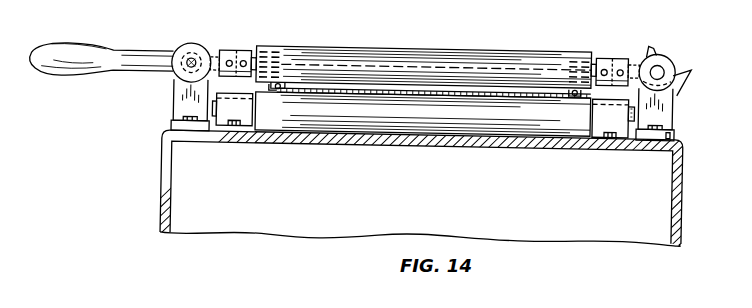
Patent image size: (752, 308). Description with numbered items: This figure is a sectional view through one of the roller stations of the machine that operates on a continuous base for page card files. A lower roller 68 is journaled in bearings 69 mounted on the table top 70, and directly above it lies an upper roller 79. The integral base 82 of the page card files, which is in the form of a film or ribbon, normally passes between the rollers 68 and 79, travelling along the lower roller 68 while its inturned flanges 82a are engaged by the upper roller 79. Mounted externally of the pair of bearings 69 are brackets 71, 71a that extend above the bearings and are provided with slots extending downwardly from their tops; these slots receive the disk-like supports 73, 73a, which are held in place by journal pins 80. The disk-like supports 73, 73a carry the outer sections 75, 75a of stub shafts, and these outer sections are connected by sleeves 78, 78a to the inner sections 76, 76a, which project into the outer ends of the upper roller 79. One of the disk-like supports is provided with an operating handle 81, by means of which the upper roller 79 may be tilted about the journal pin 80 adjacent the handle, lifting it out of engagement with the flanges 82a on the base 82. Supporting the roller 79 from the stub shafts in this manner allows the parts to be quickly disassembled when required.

The rollers 68 is at (357, 120).
The bearings 69 is at (232, 102).
The table top 70 is at (418, 141).
The bracket 71 is at (674, 104).
The bracket 71a is at (180, 95).
The disk-like support 73 is at (676, 66).
The disk-like support 73a is at (212, 48).
The outer section of stub shaft 75 is at (637, 58).
The outer section of stub shaft 75a is at (233, 48).
The inner section of stub shaft 76 is at (592, 60).
The inner section of stub shaft 76a is at (282, 82).
The sleeve 78 is at (610, 57).
The sleeve 78a is at (257, 48).
The rollers 79 is at (451, 47).
The journal pins 80 is at (182, 55).
The operating handle 81 is at (87, 48).
The integral base 82 is at (385, 88).
The inturned flanges 82a is at (286, 81).